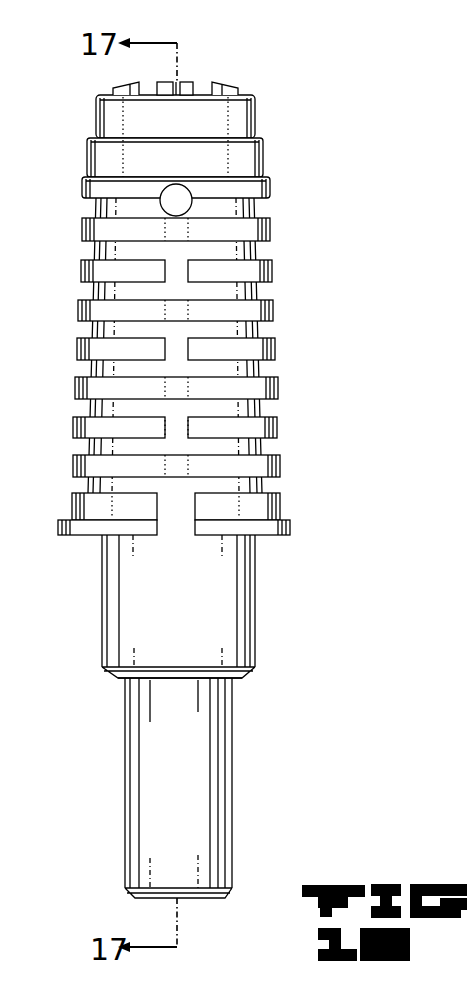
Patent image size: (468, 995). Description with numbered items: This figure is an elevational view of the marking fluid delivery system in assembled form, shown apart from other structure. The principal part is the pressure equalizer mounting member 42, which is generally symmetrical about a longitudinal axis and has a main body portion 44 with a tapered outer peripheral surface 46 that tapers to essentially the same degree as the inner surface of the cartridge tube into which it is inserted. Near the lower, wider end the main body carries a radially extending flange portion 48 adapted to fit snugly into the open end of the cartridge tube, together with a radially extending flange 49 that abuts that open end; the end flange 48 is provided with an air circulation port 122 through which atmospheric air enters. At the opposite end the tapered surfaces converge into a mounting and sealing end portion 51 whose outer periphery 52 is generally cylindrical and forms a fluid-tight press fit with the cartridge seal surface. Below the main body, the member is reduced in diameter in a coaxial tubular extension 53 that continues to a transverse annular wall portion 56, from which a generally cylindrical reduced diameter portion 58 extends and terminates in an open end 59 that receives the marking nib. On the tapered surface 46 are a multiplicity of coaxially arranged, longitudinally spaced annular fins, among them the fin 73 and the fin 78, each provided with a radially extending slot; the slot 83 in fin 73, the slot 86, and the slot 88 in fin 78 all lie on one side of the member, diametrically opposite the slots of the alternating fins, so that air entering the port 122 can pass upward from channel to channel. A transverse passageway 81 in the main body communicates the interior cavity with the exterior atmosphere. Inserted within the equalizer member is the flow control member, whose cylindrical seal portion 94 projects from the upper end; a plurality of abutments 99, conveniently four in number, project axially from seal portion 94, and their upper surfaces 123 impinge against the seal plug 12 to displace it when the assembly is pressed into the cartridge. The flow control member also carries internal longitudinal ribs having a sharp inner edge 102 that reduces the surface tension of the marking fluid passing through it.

The seal plug 12 is at (464, 505).
The pressure equalizer mounting member 42 is at (290, 219).
The main body portion 44 is at (253, 483).
The tapered outer peripheral surface 46 is at (263, 327).
The radially extending flange portion 48 is at (263, 505).
The radially extending flange 49 is at (268, 524).
The mounting and sealing end portion 51 is at (245, 155).
The outer periphery 52 is at (87, 157).
The coaxial tubular extension 53 is at (193, 627).
The annular wall portion 56 is at (243, 681).
The reduced diameter portion 58 is at (188, 792).
The open end 59 is at (203, 901).
The annular fin 73 is at (253, 231).
The annular fin 78 is at (260, 427).
The transverse passageway 81 is at (174, 198).
The slot 83 is at (176, 270).
The slot 86 is at (176, 352).
The slot 88 is at (181, 430).
The cylindrical seal portion 94 is at (233, 118).
The abutments 99 is at (121, 88).
The sharp inner edge 102 is at (208, 89).
The air circulation port 122 is at (177, 515).
The upper surfaces 123 is at (165, 81).